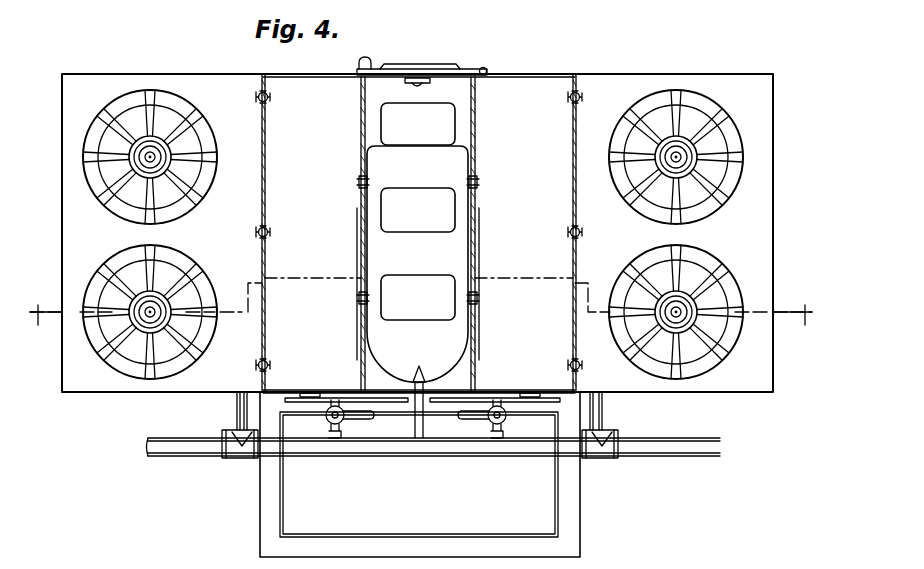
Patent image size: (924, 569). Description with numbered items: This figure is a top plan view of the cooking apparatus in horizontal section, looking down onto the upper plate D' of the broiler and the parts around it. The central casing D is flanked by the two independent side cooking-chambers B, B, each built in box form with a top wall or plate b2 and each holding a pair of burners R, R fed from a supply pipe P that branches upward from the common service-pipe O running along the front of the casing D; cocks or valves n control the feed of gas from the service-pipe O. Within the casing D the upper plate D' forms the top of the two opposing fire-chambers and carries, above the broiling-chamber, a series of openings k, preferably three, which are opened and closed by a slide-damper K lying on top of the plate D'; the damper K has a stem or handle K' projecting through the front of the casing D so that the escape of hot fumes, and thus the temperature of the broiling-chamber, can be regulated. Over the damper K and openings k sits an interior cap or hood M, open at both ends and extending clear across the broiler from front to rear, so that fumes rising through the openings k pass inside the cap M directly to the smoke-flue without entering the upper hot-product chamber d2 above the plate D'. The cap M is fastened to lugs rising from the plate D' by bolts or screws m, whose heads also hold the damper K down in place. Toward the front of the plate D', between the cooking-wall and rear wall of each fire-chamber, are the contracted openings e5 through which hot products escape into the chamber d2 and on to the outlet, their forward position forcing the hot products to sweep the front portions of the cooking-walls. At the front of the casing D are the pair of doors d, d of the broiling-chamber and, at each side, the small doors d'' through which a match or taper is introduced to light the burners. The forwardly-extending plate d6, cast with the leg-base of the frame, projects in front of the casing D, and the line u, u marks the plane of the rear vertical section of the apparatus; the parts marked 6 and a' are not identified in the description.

The side cooking-chamber B is at (784, 228).
The burner R is at (672, 160).
The casing D is at (419, 226).
The upper plate D' is at (416, 237).
The interior cap or hood M is at (360, 128).
The slide-damper K is at (417, 264).
The openings k is at (418, 211).
The bolts or screws m is at (418, 238).
The hot-product openings e5 is at (357, 320).
The hot-product chamber d2 is at (419, 245).
The brackets 6 is at (255, 97).
The hatch cover a' is at (422, 62).
The top wall or plate b2 is at (729, 233).
The section line u is at (417, 304).
The forwardly-extending plate d6 is at (420, 474).
The service-pipe O is at (196, 452).
The supply pipe P is at (236, 408).
The stem or handle K' is at (405, 402).
The cocks or valves n is at (426, 419).
The doors d is at (422, 405).
The lighting doors d'' is at (426, 403).